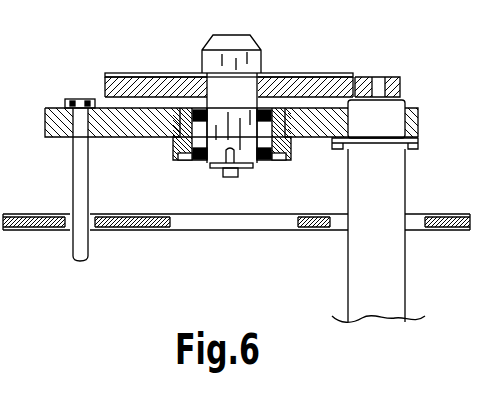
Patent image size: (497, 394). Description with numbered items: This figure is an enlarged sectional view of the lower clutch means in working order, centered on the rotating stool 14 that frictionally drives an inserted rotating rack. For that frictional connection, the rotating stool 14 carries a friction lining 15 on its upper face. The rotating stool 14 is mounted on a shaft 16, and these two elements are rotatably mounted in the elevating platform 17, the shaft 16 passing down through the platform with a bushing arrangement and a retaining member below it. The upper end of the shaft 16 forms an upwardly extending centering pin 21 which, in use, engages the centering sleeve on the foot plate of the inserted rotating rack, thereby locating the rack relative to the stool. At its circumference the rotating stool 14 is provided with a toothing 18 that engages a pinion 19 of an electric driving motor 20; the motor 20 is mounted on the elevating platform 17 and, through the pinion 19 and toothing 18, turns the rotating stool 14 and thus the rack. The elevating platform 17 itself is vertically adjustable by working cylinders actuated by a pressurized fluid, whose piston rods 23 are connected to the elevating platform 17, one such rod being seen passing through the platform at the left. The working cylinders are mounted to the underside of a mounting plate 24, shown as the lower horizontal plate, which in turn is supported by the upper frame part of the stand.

The rotating stool 14 is at (160, 82).
The friction lining 15 is at (128, 73).
The shaft 16 is at (222, 132).
The elevating platform 17 is at (46, 112).
The toothing 18 is at (107, 85).
The pinion 19 is at (393, 77).
The electric driving motor 20 is at (383, 265).
The centering pin 21 is at (252, 60).
The piston rods 23 is at (82, 173).
The mounting plate 24 is at (32, 230).